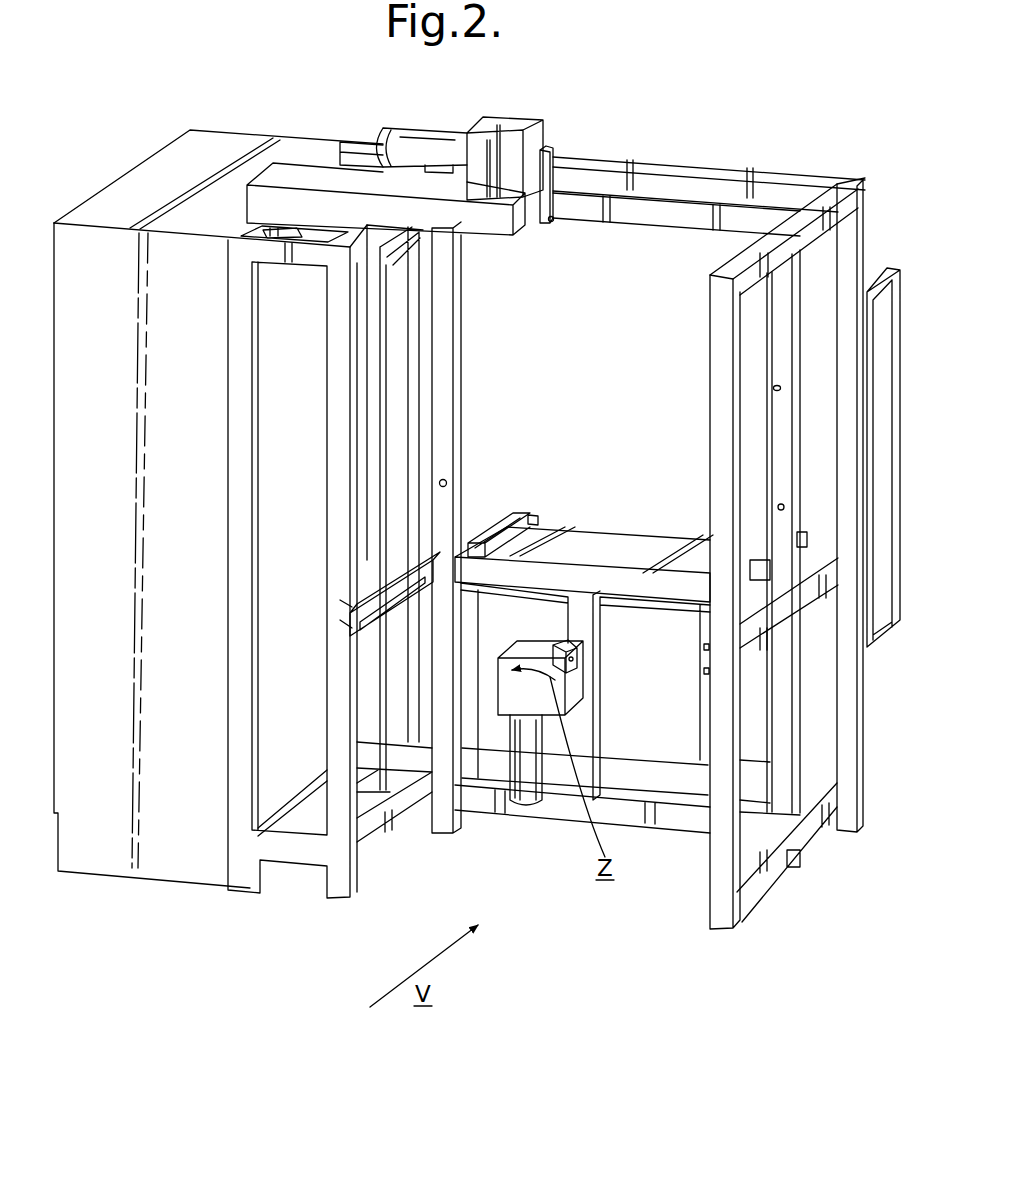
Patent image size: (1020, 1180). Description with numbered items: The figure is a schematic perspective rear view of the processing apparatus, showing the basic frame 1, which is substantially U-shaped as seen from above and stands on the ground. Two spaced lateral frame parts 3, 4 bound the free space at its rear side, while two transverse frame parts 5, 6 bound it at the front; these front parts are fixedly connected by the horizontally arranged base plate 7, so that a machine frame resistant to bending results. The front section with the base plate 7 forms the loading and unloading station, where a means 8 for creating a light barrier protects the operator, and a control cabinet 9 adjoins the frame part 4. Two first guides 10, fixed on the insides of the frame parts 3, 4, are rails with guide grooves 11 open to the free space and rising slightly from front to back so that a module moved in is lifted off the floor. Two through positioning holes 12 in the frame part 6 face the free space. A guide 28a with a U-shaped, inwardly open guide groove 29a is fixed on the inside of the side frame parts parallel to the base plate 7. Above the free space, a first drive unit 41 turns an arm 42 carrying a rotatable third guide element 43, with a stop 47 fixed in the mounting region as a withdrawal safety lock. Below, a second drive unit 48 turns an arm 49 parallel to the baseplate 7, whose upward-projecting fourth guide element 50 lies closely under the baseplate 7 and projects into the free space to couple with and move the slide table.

The basic frame 1 is at (620, 157).
The frame part 3 is at (808, 607).
The frame part 4 is at (342, 570).
The frame part 5 is at (846, 252).
The frame part 6 is at (775, 387).
The base plate 7 is at (655, 540).
The means for creating a light barrier 8 is at (890, 398).
The control cabinet 9 is at (137, 183).
The first guides 10 is at (400, 628).
The guide grooves 11 is at (375, 613).
The positioning holes 12 is at (779, 505).
The guide 28a is at (502, 512).
The guide groove 29a is at (538, 522).
The first drive unit 41 is at (509, 143).
The arm 42 is at (546, 177).
The third guide element 43 is at (551, 222).
The stop 47 is at (303, 205).
The second drive unit 48 is at (522, 717).
The arm 49 is at (560, 648).
The fourth guide element 50 is at (575, 660).